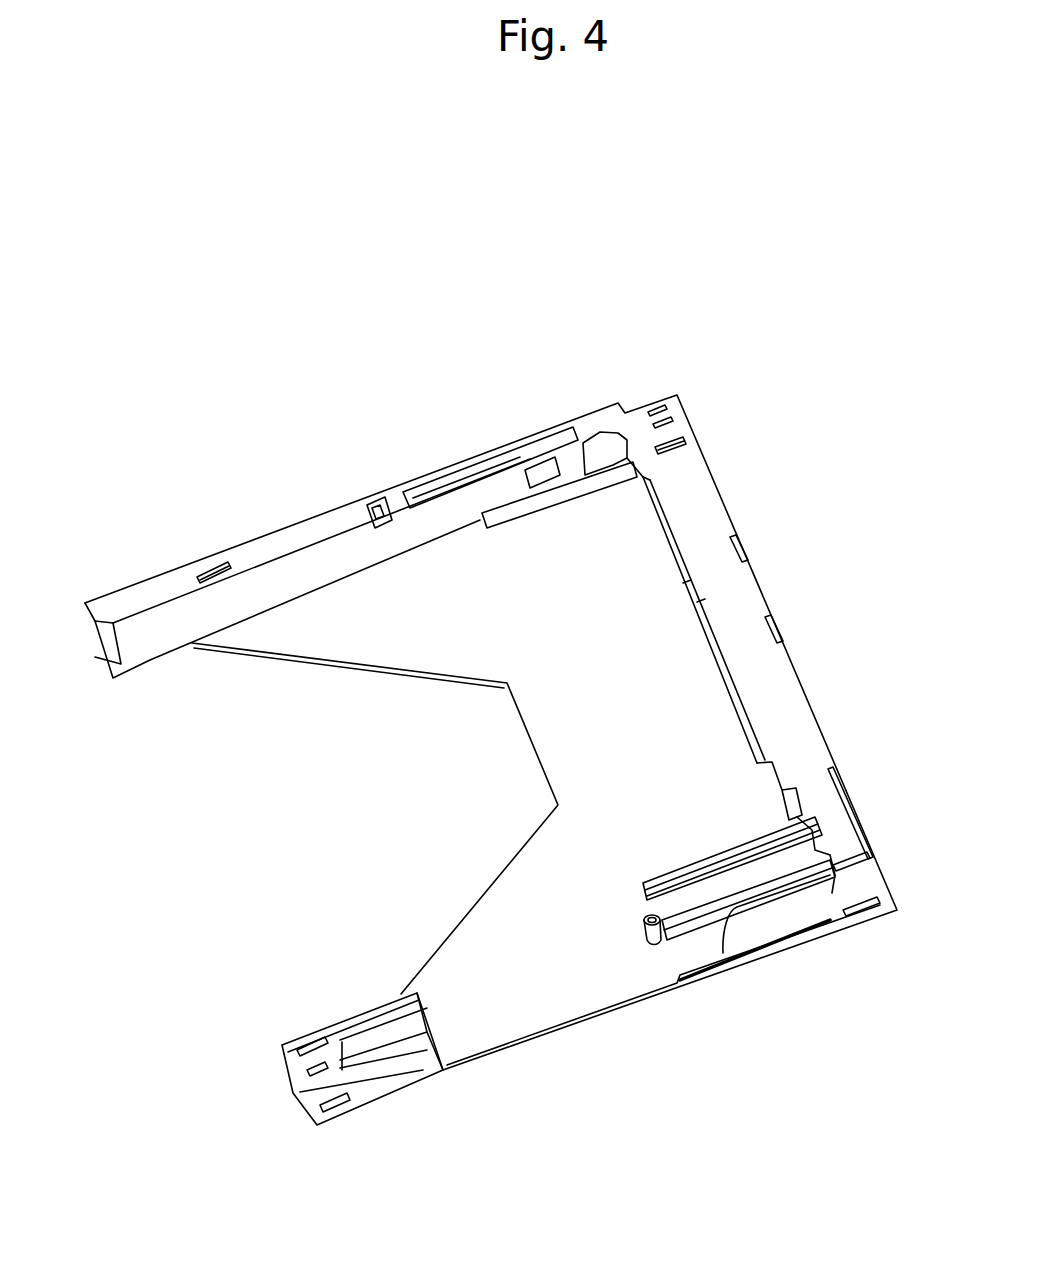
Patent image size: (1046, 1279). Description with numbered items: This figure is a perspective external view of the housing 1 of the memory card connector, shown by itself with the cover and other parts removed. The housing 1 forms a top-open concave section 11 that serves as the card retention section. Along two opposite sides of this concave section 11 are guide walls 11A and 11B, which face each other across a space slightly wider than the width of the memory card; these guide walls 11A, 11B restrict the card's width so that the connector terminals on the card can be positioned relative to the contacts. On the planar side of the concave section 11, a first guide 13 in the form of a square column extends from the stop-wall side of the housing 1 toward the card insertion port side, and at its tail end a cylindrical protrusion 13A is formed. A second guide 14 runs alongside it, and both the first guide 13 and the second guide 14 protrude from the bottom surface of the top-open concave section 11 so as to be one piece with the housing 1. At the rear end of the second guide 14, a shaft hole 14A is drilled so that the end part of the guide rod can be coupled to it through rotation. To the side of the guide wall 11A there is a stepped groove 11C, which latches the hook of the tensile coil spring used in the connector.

The housing 1 is at (312, 450).
The top-open concave section 11 is at (567, 725).
The guide wall 11A is at (347, 1015).
The guide wall 11B is at (138, 625).
The stepped groove 11C is at (293, 1073).
The first guide 13 is at (737, 907).
The cylindrical protrusion 13A is at (643, 923).
The second guide 14 is at (673, 873).
The shaft hole 14A is at (837, 793).